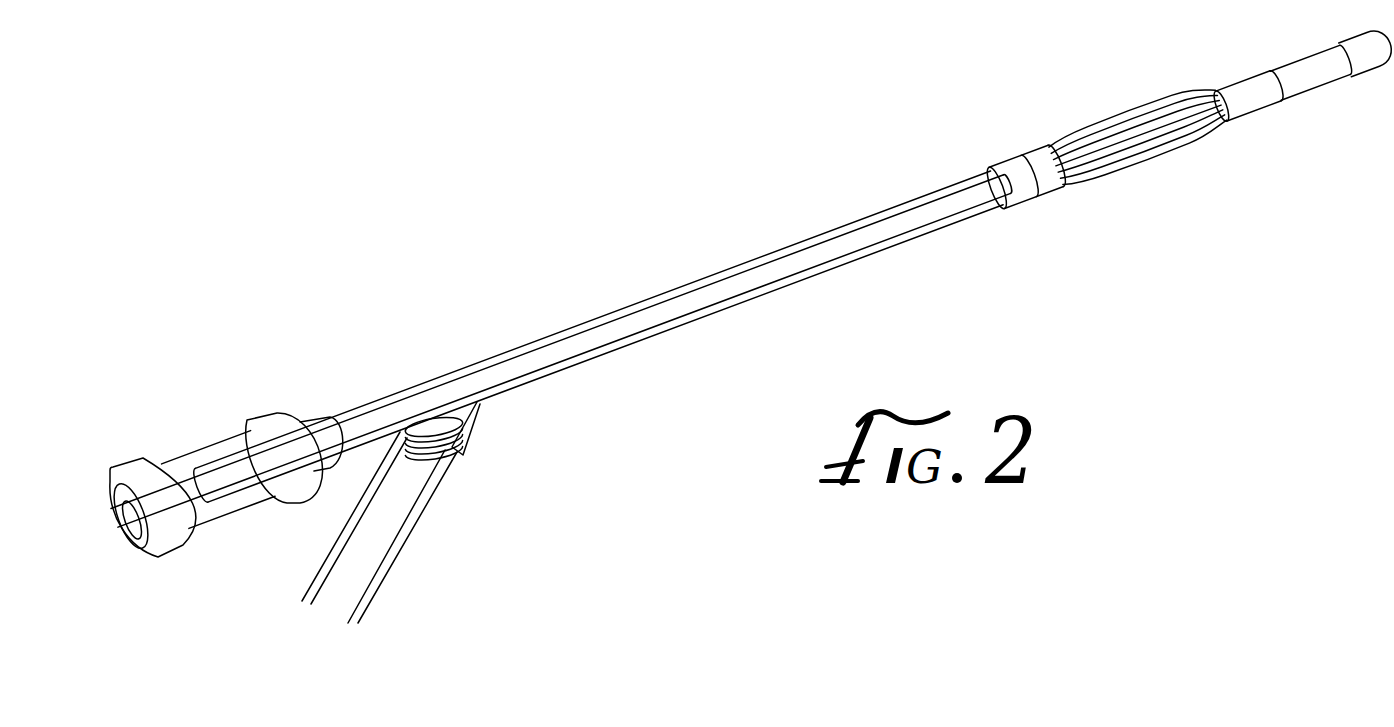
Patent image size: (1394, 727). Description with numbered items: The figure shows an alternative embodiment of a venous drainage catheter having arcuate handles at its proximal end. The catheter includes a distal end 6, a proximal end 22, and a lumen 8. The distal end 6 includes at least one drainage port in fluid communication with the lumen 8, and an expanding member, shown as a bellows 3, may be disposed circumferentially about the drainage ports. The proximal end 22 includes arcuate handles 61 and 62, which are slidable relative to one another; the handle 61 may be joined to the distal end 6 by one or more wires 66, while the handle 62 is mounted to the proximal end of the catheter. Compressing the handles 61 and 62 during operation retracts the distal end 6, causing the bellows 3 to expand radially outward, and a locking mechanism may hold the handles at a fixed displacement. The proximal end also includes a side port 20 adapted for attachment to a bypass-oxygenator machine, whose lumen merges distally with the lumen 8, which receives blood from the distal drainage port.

The bellows 3 is at (1127, 163).
The distal end 6 is at (1356, 70).
The lumen 8 is at (747, 282).
The side port 20 is at (330, 610).
The proximal end 22 is at (223, 493).
The handle 61 is at (272, 413).
The handle 62 is at (132, 462).
The wires 66 is at (632, 308).